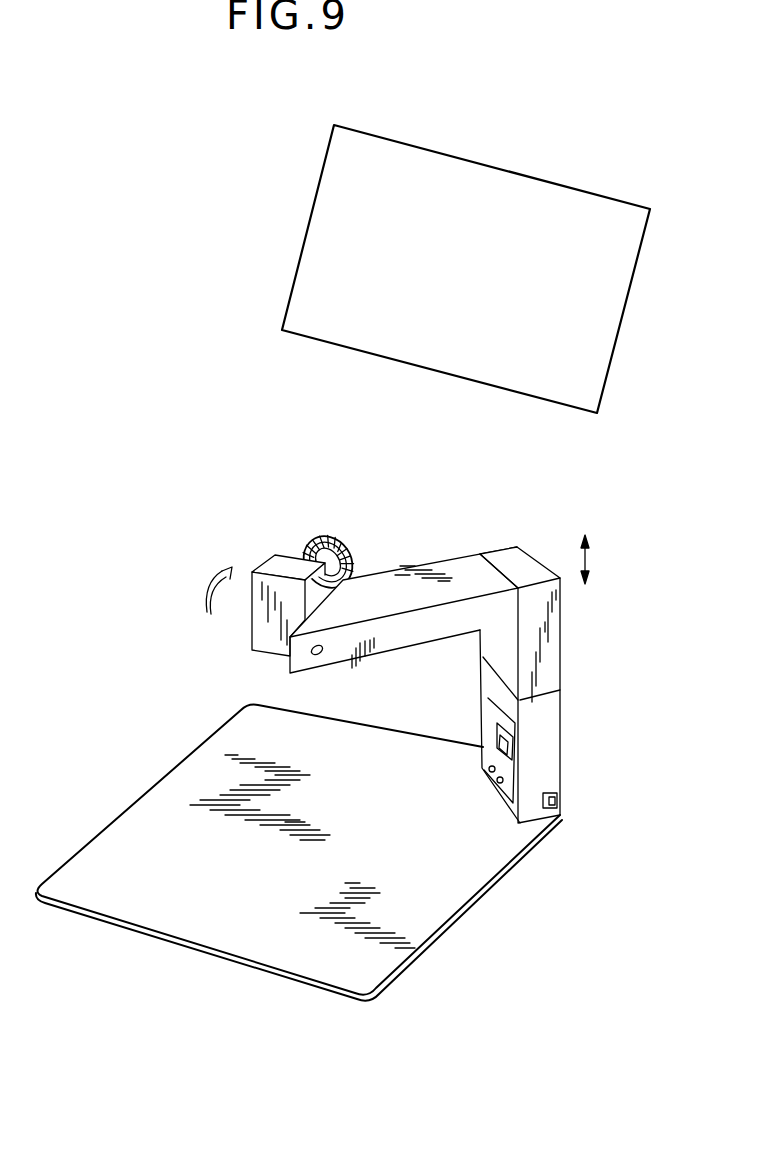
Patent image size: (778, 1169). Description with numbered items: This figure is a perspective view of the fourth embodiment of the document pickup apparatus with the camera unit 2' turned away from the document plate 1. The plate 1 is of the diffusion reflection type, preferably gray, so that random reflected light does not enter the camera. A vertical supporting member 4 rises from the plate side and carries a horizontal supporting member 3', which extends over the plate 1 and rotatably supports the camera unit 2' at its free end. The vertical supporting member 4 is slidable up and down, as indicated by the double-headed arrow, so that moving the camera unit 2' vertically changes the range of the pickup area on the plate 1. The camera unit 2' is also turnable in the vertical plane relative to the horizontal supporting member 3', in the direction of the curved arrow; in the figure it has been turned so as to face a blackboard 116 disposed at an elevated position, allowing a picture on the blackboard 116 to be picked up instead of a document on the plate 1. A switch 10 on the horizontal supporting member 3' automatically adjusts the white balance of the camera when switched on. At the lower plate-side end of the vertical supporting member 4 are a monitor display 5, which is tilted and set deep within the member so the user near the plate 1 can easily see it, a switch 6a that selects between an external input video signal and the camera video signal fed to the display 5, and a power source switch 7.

The blackboard 116 is at (608, 333).
The camera unit 2' is at (268, 591).
The horizontal supporting member 3' is at (404, 592).
The switch 10 is at (320, 654).
The vertical supporting member 4 is at (552, 648).
The monitor display 5 is at (512, 748).
The switch 6a is at (500, 783).
The power source switch 7 is at (557, 800).
The plate 1 is at (443, 922).